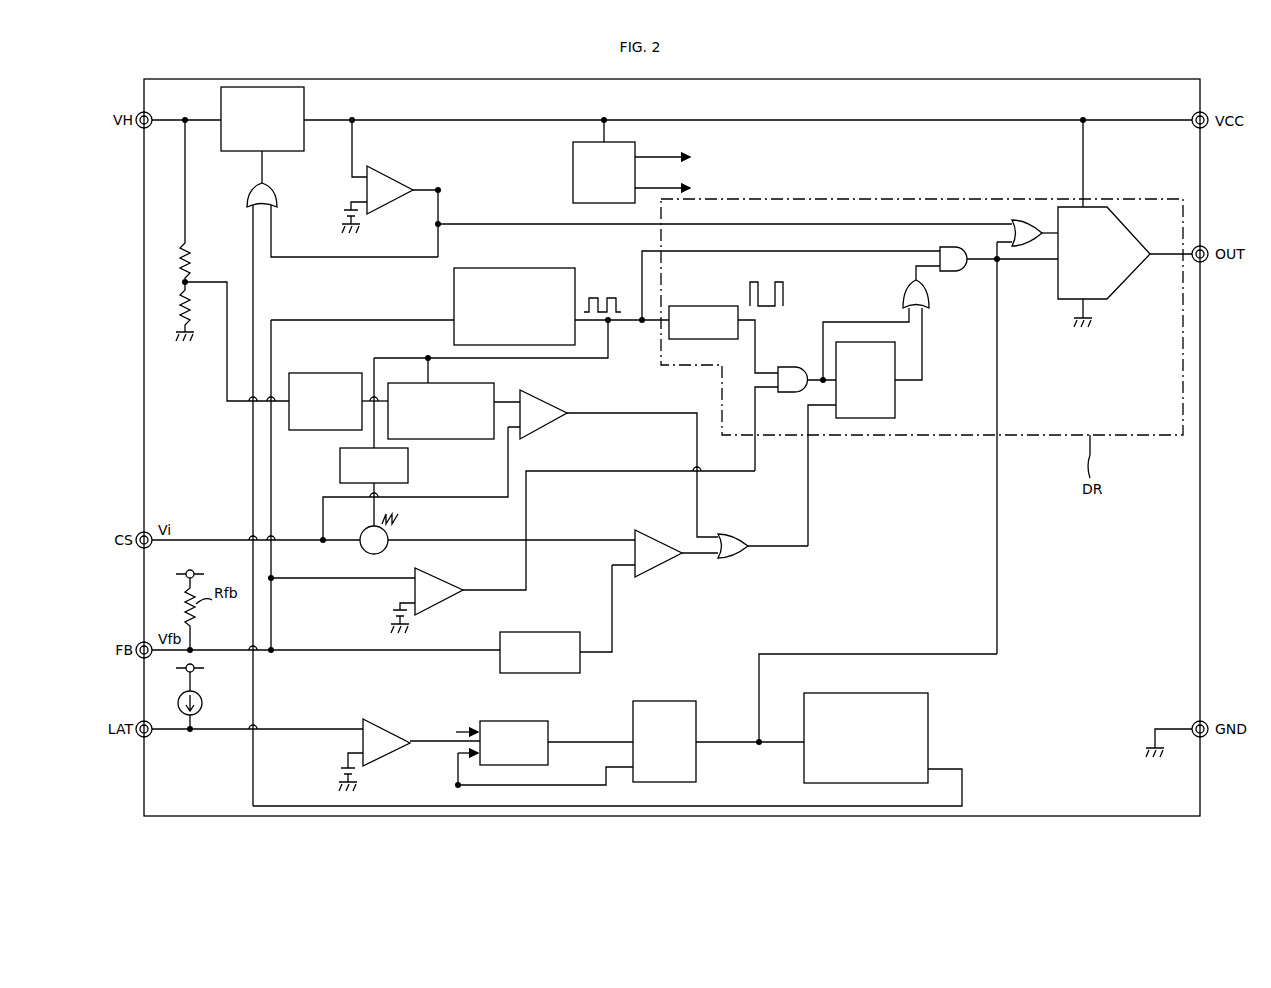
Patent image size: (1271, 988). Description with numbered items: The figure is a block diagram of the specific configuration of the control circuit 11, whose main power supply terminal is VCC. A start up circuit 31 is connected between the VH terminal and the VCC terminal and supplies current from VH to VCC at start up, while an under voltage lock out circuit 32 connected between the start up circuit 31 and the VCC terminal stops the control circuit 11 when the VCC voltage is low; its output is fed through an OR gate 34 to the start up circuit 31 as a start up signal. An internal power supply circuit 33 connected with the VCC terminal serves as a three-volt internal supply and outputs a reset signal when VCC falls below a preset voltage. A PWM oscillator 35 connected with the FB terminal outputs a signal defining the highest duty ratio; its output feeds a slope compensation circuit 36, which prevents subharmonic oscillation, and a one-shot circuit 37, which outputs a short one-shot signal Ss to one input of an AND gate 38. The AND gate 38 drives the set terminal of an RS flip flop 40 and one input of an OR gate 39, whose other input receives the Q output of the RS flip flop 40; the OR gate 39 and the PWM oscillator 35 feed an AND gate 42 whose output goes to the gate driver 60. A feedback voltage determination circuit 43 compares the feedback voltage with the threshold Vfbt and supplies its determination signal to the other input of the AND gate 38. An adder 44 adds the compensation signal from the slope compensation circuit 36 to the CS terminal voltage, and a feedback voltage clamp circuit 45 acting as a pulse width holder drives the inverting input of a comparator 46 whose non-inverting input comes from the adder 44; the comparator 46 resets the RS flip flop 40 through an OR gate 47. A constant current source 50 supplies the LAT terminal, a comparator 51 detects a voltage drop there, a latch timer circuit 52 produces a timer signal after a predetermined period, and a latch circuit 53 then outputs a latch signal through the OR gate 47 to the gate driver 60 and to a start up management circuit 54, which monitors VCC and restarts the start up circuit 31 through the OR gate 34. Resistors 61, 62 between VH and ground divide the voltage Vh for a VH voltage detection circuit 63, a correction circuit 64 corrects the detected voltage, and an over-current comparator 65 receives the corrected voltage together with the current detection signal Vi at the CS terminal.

The control circuit 11 is at (1160, 79).
The start up circuit 31 is at (305, 96).
The under voltage lock out (UVLO) circuit 32 is at (410, 180).
The internal power supply circuit 33 is at (573, 170).
The OR gate 34 is at (250, 198).
The pulse width modulation (PWM) oscillator 35 is at (515, 268).
The slope compensation circuit 36 is at (340, 468).
The one-shot circuit 37 is at (690, 306).
The AND gate 38 is at (793, 392).
The OR gate 39 is at (903, 294).
The RS flip flop 40 is at (895, 412).
The AND gate 42 is at (965, 272).
The feedback voltage determination circuit 43 is at (450, 607).
The adder 44 is at (390, 530).
The feedback voltage clamp circuit 45 is at (543, 632).
The comparator 46 is at (660, 577).
The OR gate 47 is at (1020, 215).
The constant current source 50 is at (203, 703).
The comparator 51 is at (407, 726).
The latch timer circuit 52 is at (515, 721).
The latch circuit 53 is at (675, 701).
The start up management circuit 54 is at (840, 693).
The gate driver 60 is at (1115, 297).
The resistor 61 is at (178, 256).
The resistor 62 is at (178, 300).
The VH voltage detection circuit 63 is at (310, 373).
The correction circuit 64 is at (440, 439).
The over-current comparator 65 is at (560, 395).